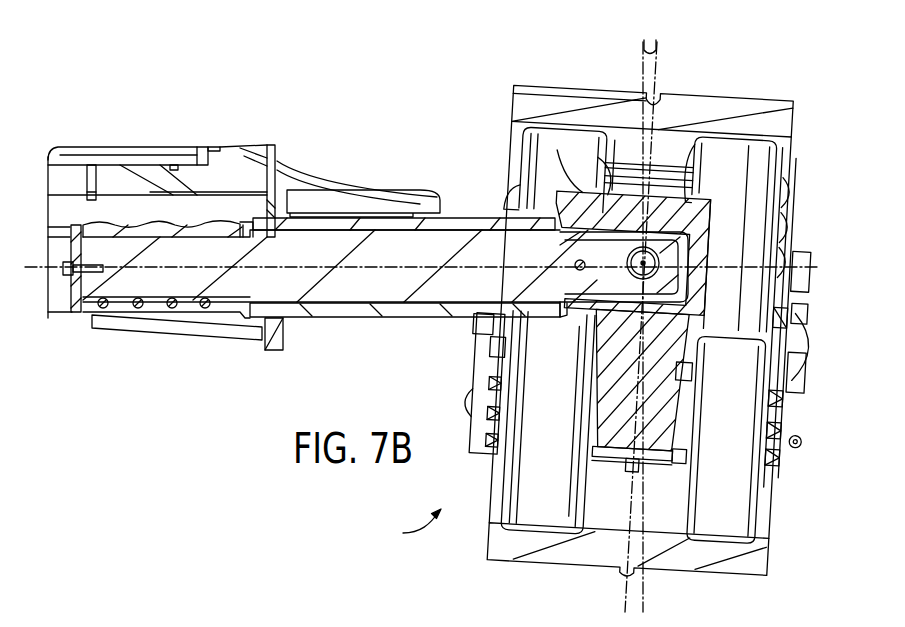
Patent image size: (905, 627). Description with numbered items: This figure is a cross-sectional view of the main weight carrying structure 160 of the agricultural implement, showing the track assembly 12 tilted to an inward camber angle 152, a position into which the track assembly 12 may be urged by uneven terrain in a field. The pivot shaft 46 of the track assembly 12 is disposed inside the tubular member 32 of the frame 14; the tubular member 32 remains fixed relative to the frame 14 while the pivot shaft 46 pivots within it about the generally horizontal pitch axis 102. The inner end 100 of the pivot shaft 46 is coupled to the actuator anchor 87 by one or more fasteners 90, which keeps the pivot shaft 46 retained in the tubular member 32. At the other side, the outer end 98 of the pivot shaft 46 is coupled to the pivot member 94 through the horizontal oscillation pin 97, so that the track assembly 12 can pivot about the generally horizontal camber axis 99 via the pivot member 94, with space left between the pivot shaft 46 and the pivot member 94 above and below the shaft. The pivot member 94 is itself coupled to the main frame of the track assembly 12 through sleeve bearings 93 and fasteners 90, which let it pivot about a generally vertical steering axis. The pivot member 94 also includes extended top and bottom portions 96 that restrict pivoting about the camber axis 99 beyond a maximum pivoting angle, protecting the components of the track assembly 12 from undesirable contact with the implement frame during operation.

The track assembly 12 is at (597, 332).
The frame 14 is at (333, 205).
The tubular member 32 is at (452, 228).
The pivot shaft 46 is at (355, 290).
The actuator anchor 87 is at (153, 308).
The fasteners 90 is at (205, 308).
The sleeve bearings 93 is at (683, 368).
The pivot member 94 is at (657, 397).
The extended top and/or bottom portions 96 is at (597, 212).
The horizontal oscillation pin 97 is at (650, 263).
The outer end 98 is at (670, 283).
The horizontal camber axis 99 is at (628, 272).
The inner end 100 is at (113, 288).
The horizontal pitch axis 102 is at (57, 275).
The inward camber angle 152 is at (647, 42).
The main weight carrying structure 160 is at (411, 129).